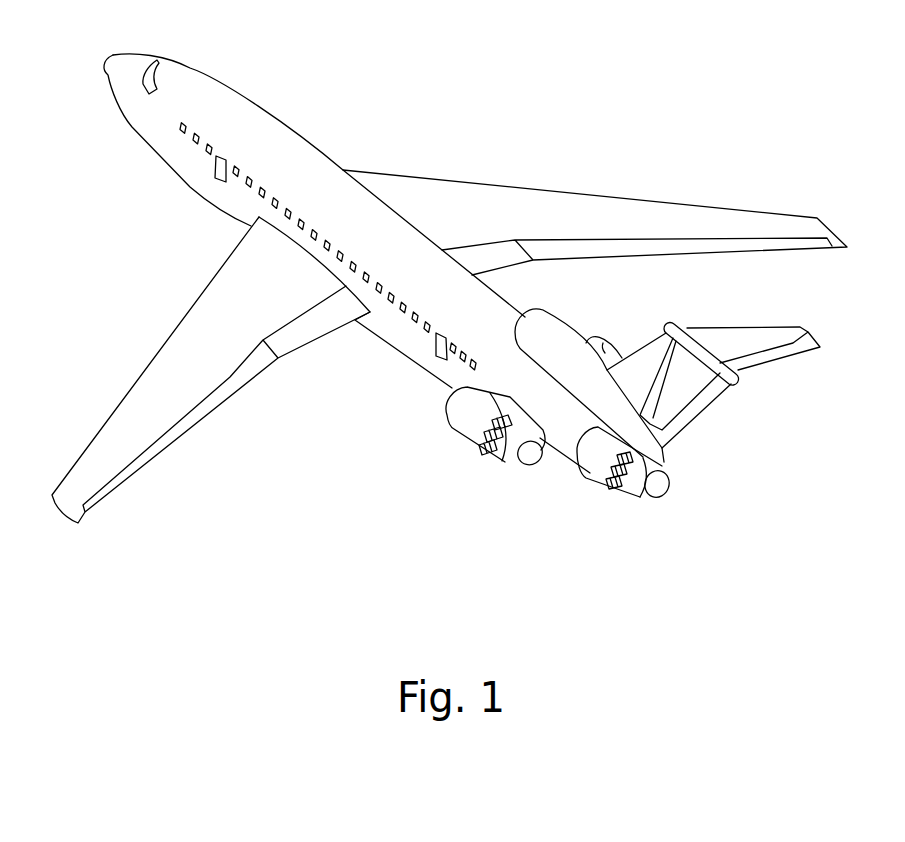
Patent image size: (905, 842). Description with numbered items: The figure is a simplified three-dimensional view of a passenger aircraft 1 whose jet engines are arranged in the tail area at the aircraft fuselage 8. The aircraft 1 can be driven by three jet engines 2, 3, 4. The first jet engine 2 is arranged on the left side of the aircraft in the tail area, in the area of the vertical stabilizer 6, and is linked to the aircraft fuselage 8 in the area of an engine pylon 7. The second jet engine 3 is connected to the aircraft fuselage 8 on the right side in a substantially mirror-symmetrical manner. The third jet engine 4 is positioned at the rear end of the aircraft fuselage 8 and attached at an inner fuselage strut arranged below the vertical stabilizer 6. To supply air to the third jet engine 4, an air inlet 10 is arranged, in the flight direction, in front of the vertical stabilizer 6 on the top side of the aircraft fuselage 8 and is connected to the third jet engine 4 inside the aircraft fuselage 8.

The passenger aircraft 1 is at (418, 170).
The first jet engine 2 is at (470, 420).
The second jet engine 3 is at (605, 345).
The third jet engine 4 is at (595, 466).
The vertical stabilizer 6 is at (676, 428).
The engine pylon 7 is at (533, 460).
The aircraft fuselage 8 is at (417, 360).
The air inlet 10 is at (538, 310).